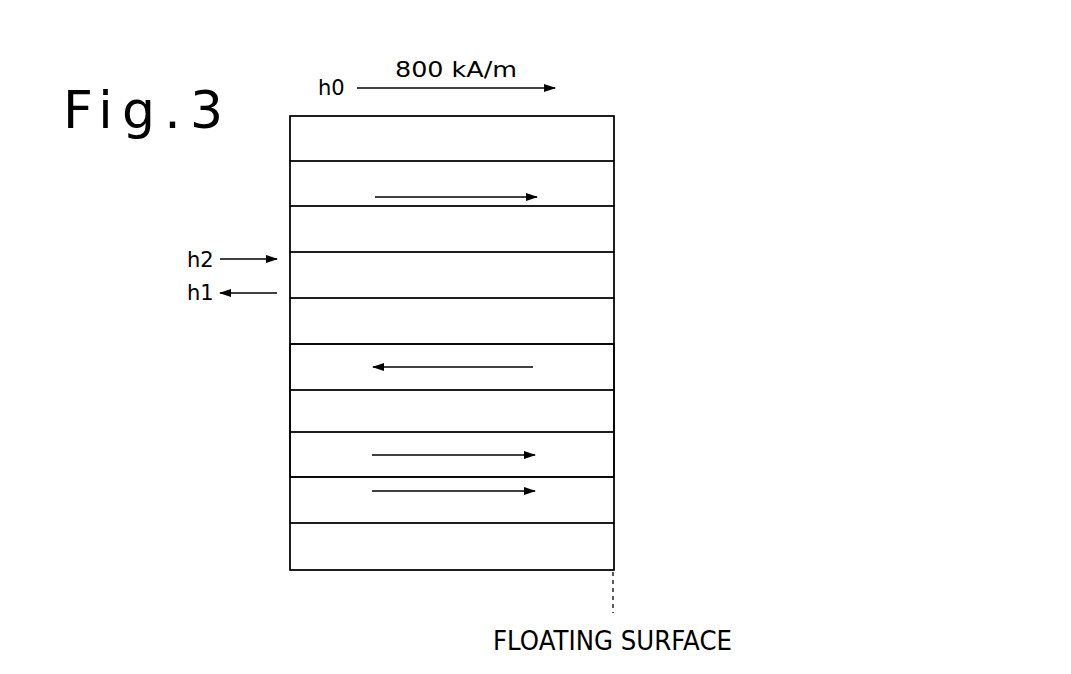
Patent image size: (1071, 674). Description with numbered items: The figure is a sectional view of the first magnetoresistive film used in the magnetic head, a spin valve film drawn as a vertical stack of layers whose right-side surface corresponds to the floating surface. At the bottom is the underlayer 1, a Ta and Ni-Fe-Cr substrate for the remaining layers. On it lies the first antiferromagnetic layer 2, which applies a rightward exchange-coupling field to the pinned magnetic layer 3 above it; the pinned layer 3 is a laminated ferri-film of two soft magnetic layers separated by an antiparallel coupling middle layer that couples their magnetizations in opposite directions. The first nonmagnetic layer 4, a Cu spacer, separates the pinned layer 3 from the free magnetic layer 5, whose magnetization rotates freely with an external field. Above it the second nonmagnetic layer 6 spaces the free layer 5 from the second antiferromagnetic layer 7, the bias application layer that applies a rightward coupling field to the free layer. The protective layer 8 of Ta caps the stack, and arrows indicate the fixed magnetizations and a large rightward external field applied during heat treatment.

The protective layer 8 is at (603, 137).
The second antiferromagnetic layer 7 is at (603, 185).
The second nonmagnetic layer 6 is at (601, 232).
The free magnetic layer 5 is at (601, 277).
The first nonmagnetic layer 4 is at (601, 324).
The pinned magnetic layer 3 is at (532, 410).
The first antiferromagnetic layer 2 is at (594, 505).
The underlayer 1 is at (594, 553).